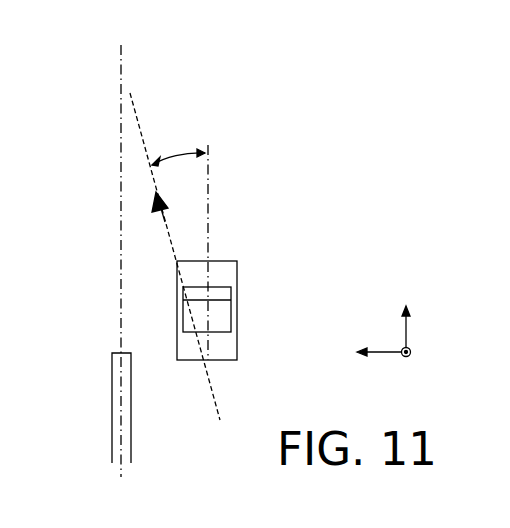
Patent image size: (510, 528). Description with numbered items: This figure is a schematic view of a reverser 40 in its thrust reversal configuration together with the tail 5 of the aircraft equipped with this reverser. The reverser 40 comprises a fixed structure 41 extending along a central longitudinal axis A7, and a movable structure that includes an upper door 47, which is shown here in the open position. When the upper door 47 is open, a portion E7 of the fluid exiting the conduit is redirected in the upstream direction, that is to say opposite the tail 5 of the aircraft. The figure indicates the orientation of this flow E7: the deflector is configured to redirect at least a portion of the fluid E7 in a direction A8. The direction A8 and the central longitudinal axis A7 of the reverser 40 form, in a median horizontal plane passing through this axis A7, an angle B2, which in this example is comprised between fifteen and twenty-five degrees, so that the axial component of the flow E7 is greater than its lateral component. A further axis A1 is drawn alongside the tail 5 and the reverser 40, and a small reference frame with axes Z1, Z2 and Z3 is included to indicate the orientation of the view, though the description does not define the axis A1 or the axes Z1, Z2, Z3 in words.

The tail 5 is at (112, 430).
The reverser 40 is at (240, 250).
The fixed structure 41 is at (238, 289).
The upper door 47 is at (222, 320).
The first axis A1 is at (121, 61).
The central longitudinal axis A7 is at (209, 178).
The direction A8 is at (137, 120).
The angle B2 is at (183, 154).
The portion of the fluid E7 is at (163, 222).
The first coordinate axis Z1 is at (363, 365).
The second coordinate axis Z2 is at (426, 372).
The third coordinate axis Z3 is at (425, 322).